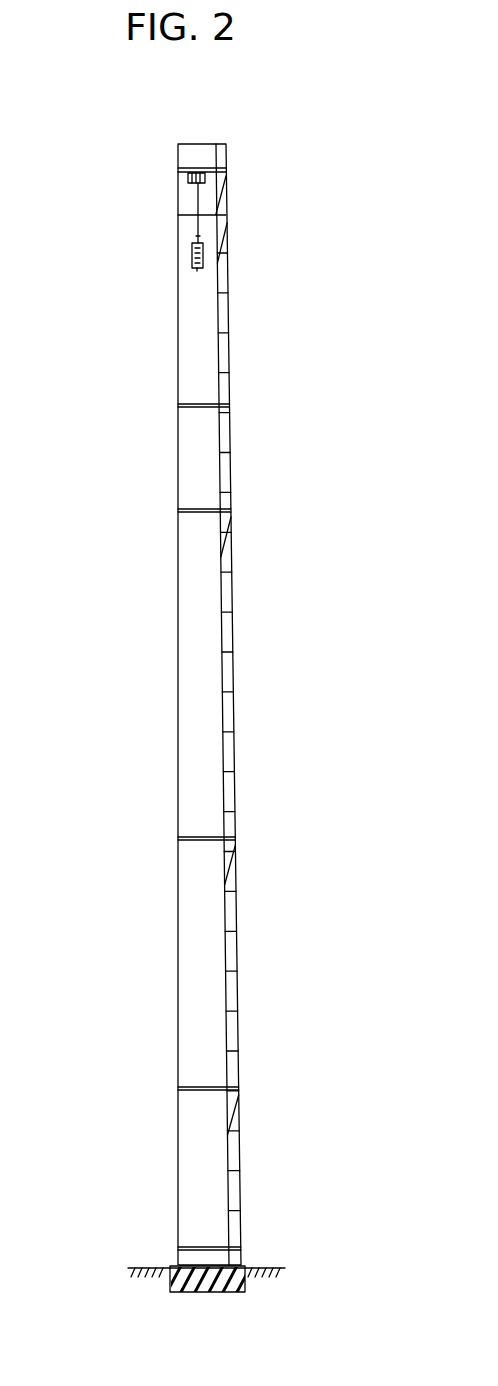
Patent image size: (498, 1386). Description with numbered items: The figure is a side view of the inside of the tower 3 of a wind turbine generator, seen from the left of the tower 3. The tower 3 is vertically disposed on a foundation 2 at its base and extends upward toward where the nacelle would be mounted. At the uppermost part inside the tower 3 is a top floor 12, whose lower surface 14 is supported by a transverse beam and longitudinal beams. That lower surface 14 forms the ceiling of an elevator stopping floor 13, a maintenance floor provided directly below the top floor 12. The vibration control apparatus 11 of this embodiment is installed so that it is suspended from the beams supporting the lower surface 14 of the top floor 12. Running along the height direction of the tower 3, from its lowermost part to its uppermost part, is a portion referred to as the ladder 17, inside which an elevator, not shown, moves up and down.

The foundation 2 is at (207, 1292).
The tower 3 is at (178, 682).
The vibration control apparatus 11 is at (166, 247).
The top floor 12 is at (190, 168).
The elevator stopping floor 13 is at (205, 217).
The lower surface 14 is at (184, 177).
The ladder 17 is at (225, 642).